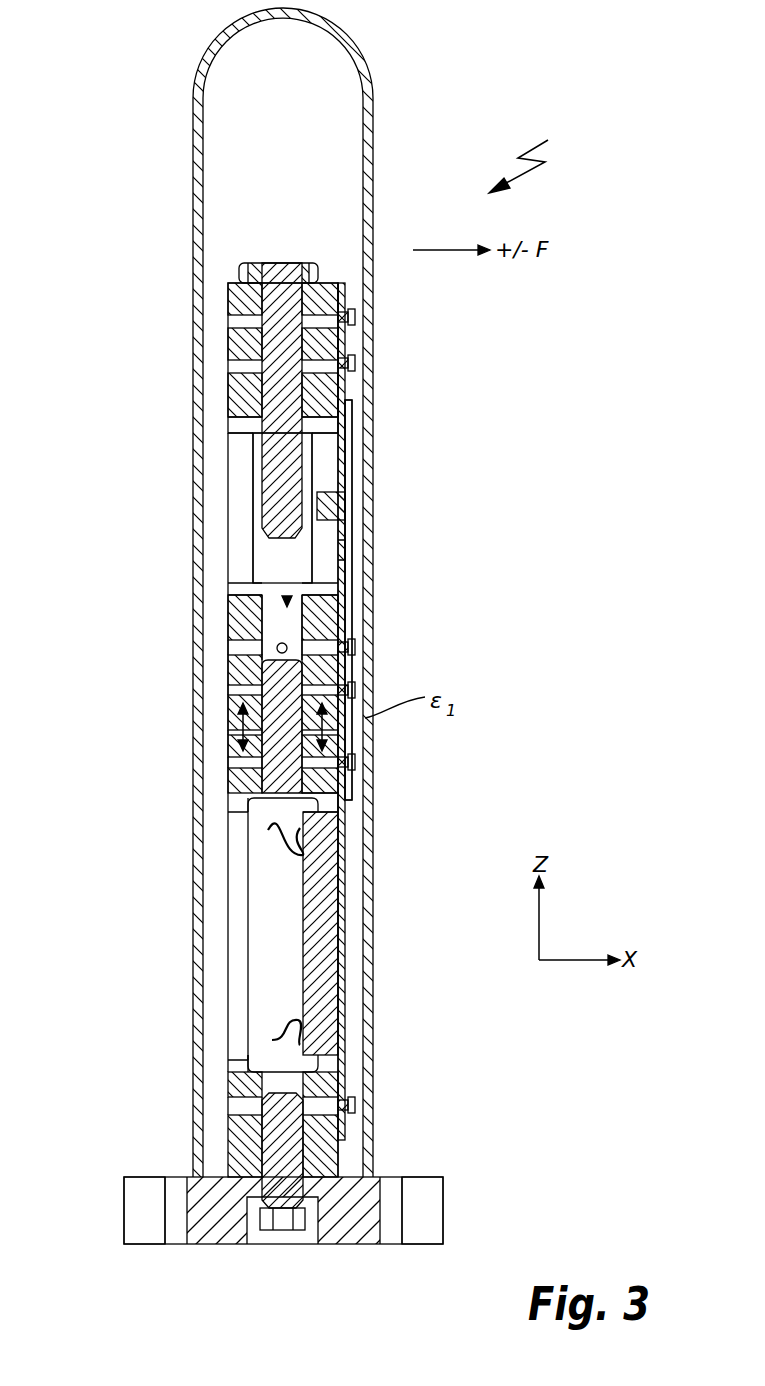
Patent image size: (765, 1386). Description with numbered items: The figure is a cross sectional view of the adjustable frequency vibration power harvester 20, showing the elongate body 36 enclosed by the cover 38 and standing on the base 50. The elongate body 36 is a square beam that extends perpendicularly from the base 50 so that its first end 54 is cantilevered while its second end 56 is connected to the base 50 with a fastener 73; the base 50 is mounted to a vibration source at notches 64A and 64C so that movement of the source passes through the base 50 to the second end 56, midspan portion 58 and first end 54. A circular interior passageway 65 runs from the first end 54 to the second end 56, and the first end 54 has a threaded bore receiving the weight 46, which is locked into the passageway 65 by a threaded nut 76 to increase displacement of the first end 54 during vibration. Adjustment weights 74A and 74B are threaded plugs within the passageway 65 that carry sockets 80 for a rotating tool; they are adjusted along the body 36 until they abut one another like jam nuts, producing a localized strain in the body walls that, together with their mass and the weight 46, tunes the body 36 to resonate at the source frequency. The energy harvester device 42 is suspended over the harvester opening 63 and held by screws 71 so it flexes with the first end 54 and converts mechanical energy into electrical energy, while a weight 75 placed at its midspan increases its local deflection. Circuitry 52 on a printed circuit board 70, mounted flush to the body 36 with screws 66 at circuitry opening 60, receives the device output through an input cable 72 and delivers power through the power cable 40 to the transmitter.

The adjustable frequency vibration power harvester 20 is at (536, 152).
The elongate body 36 is at (232, 472).
The cover 38 is at (360, 48).
The power cable 40 is at (290, 1012).
The energy harvester device 42 is at (352, 530).
The weight 46 is at (305, 268).
The base 50 is at (357, 1232).
The circuitry 52 is at (320, 955).
The first end 54 is at (232, 298).
The second end 56 is at (236, 1145).
The midspan portion 58 is at (240, 708).
The circuitry opening 60 is at (330, 802).
The harvester opening 63 is at (346, 458).
The notch 64A is at (415, 1195).
The notch 64C is at (145, 1190).
The interior passageway 65 is at (350, 553).
The screws 66 is at (357, 762).
The printed circuit board 70 is at (345, 880).
The screws 71 is at (355, 318).
The input cable 72 is at (300, 862).
The fastener 73 is at (283, 1190).
The adjustment weight 74A is at (238, 645).
The adjustment weight 74B is at (265, 780).
The weight 75 is at (346, 505).
The threaded nut 76 is at (320, 268).
The sockets 80 is at (287, 598).